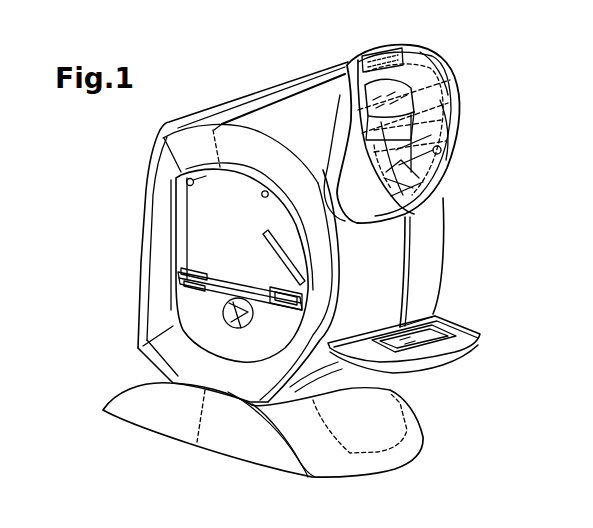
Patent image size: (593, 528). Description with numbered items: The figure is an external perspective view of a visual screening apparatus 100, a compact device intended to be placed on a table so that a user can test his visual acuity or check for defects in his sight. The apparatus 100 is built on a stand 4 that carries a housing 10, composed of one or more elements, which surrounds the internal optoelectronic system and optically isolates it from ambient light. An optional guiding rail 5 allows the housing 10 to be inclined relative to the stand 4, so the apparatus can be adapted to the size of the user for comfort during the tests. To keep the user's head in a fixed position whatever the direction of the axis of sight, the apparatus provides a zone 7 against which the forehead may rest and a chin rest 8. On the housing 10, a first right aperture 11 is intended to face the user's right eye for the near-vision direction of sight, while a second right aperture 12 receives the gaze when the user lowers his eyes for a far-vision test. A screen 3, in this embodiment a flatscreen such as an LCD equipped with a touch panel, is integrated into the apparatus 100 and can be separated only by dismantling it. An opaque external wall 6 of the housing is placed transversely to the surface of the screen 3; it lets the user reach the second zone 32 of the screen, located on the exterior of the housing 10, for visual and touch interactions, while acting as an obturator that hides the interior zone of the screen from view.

The visual screening apparatus 100 is at (243, 232).
The screen 3 is at (468, 334).
The second zone 32 is at (443, 321).
The stand 4 is at (413, 424).
The guiding rail 5 is at (357, 393).
The opaque external wall 6 is at (390, 272).
The zone against which the forehead may rest 7 is at (373, 50).
The chin rest 8 is at (440, 183).
The housing 10 is at (437, 50).
The first right aperture 11 is at (462, 100).
The second right aperture 12 is at (352, 104).